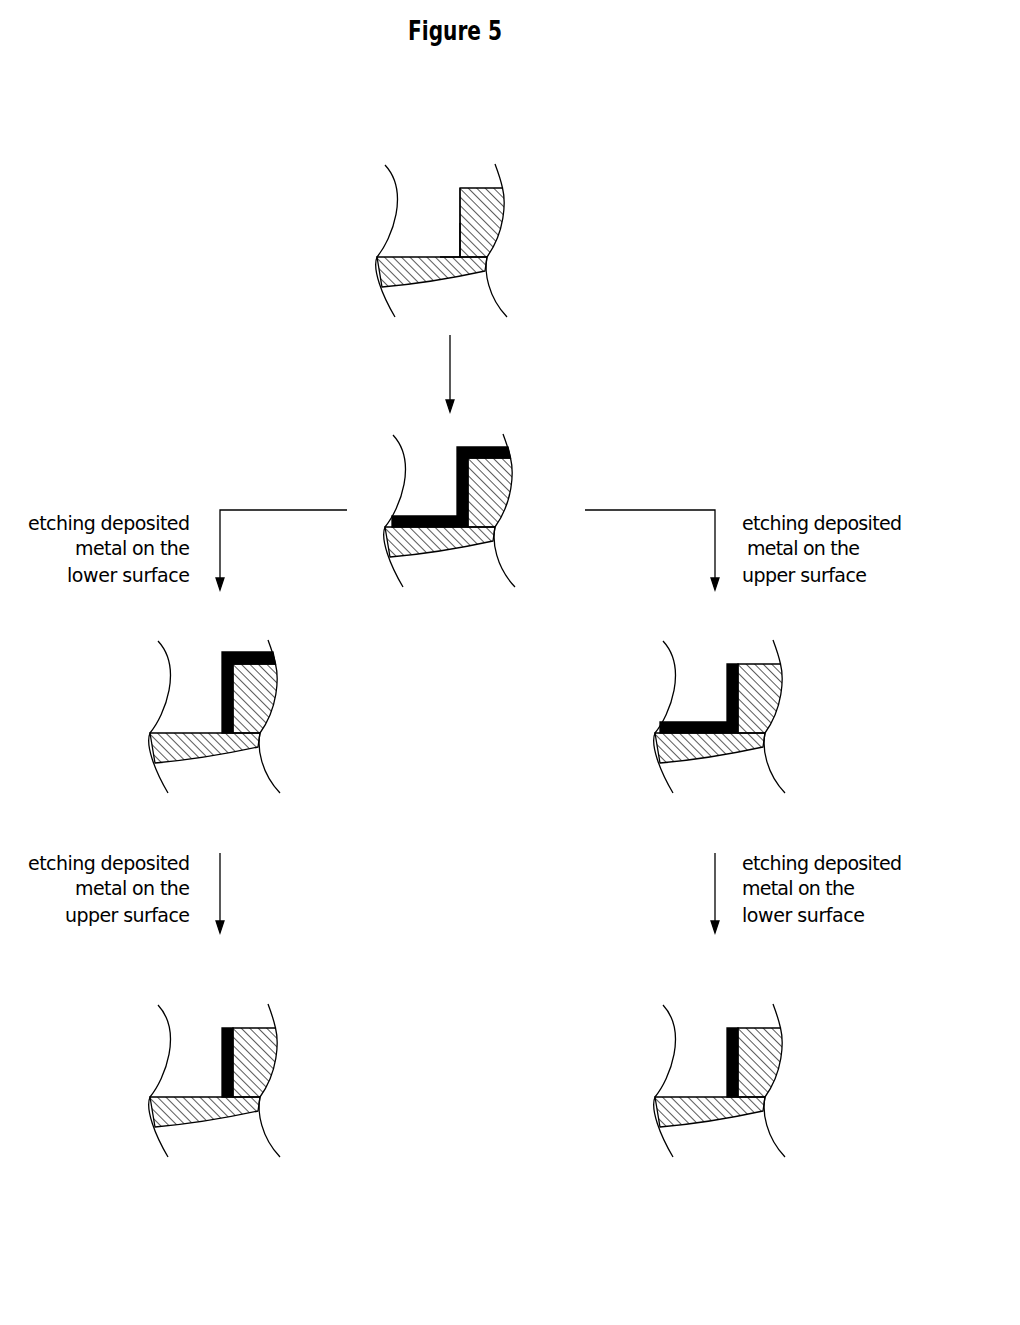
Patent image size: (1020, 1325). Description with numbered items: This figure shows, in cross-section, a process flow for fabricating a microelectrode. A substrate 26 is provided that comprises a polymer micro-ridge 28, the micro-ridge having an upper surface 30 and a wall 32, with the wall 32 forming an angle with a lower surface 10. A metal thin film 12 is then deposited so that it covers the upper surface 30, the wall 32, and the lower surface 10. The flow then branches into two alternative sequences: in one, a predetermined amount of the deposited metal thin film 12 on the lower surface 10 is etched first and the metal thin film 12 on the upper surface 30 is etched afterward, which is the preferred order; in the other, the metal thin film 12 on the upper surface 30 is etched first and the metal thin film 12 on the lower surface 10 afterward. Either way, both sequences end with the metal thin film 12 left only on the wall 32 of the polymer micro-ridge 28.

The lower surface 10 is at (418, 221).
The metal thin film 12 is at (451, 481).
The substrate 26 is at (459, 193).
The polymer micro-ridge 28 is at (428, 198).
The upper surface 30 is at (482, 190).
The wall 32 is at (431, 220).